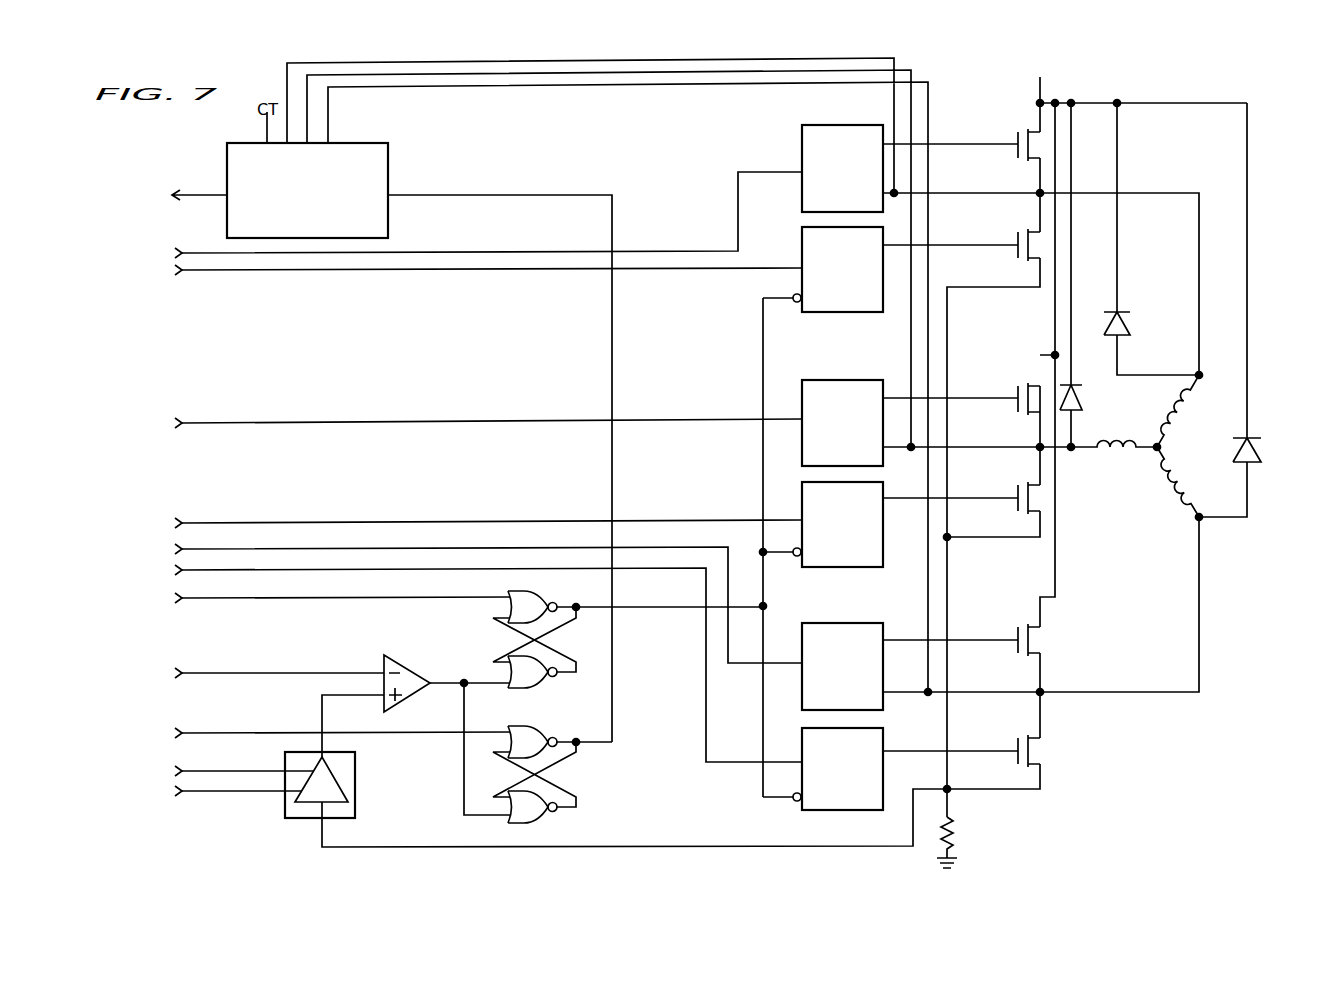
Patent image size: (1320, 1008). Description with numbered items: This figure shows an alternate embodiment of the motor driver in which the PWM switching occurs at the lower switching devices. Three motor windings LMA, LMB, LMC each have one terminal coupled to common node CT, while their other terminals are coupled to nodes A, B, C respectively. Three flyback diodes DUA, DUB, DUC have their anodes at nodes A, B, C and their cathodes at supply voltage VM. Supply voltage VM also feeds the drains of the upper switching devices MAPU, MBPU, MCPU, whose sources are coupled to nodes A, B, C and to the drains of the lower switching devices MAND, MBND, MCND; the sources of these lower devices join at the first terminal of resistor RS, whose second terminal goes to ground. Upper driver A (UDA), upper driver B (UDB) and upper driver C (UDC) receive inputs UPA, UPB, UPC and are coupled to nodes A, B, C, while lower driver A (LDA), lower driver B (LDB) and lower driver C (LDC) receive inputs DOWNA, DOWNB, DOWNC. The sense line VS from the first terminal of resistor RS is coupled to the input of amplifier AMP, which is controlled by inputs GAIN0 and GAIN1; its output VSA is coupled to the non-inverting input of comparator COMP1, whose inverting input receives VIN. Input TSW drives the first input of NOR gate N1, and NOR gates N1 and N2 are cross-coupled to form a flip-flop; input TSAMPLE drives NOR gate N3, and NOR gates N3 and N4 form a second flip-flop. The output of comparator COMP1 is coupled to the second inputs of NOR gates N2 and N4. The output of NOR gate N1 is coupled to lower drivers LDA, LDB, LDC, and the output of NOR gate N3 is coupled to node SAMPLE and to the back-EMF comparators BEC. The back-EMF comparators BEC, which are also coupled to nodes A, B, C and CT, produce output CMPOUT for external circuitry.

The back-EMF comparators BEC is at (374, 143).
The output CMPOUT is at (159, 197).
The input UPA is at (464, 218).
The input DOWNA is at (452, 275).
The input UPB is at (466, 425).
The input DOWNB is at (452, 524).
The input UPC is at (466, 602).
The input DOWNC is at (453, 662).
The input TSW is at (317, 599).
The input VIN is at (261, 675).
The input TSAMPLE is at (297, 735).
The input GAIN1 is at (211, 772).
The input GAIN0 is at (206, 792).
The comparator COMP1 is at (421, 676).
The amplified sense voltage VSA is at (322, 717).
The amplifier AMP is at (341, 785).
The sense voltage VS is at (644, 847).
The NOR gate N1 is at (532, 599).
The NOR gate N2 is at (532, 682).
The NOR gate N3 is at (535, 735).
The NOR gate N4 is at (532, 817).
The node SAMPLE is at (612, 695).
The upper driver A UDA is at (802, 138).
The lower driver A LDA is at (832, 312).
The upper driver B UDB is at (825, 380).
The lower driver B LDB is at (836, 567).
The upper driver C UDC is at (825, 623).
The lower driver C LDC is at (836, 810).
The upper switching device MAPU is at (961, 134).
The lower switching device MAND is at (961, 235).
The upper switching device MBPU is at (961, 391).
The lower switching device MBND is at (961, 489).
The upper switching device MCPU is at (961, 629).
The lower switching device MCND is at (961, 740).
The supply voltage VM is at (1133, 94).
The flyback diode DUA is at (1151, 239).
The flyback diode DUB is at (1092, 275).
The flyback diode DUC is at (1248, 310).
The motor winding LMA is at (1189, 409).
The motor winding LMB is at (1122, 456).
The motor winding LMC is at (1185, 484).
The node CT is at (1162, 447).
The node A is at (1208, 379).
The node B is at (1070, 466).
The node C is at (1189, 521).
The resistor RS is at (961, 842).